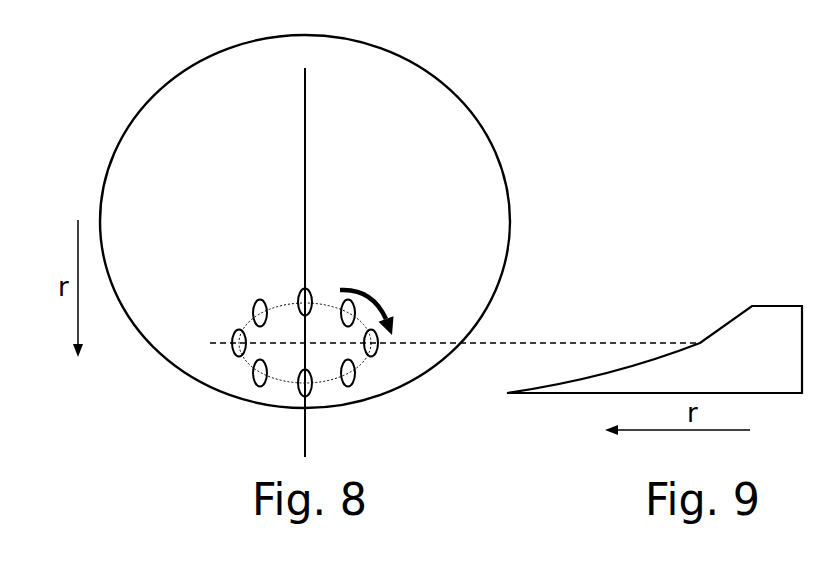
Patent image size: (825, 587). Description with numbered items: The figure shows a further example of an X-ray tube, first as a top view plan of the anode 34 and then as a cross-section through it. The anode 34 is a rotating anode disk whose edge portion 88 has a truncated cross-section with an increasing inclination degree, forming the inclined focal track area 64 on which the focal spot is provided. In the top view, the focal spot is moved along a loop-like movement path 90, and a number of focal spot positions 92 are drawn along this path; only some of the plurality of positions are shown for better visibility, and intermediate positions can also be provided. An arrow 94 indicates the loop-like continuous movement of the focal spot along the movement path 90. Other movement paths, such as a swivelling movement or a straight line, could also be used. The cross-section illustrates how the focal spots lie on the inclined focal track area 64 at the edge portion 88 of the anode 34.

In FIG. 8, the anode 34 is at (441, 80).
In FIG. 8, the loop-like movement path 90 is at (288, 302).
In FIG. 8, the focal spot positions 92 is at (253, 380).
In FIG. 8, the arrow 94 is at (377, 292).
In FIG. 9, the edge portion 88 is at (653, 336).
In FIG. 9, the inclined focal track area 64 is at (699, 342).